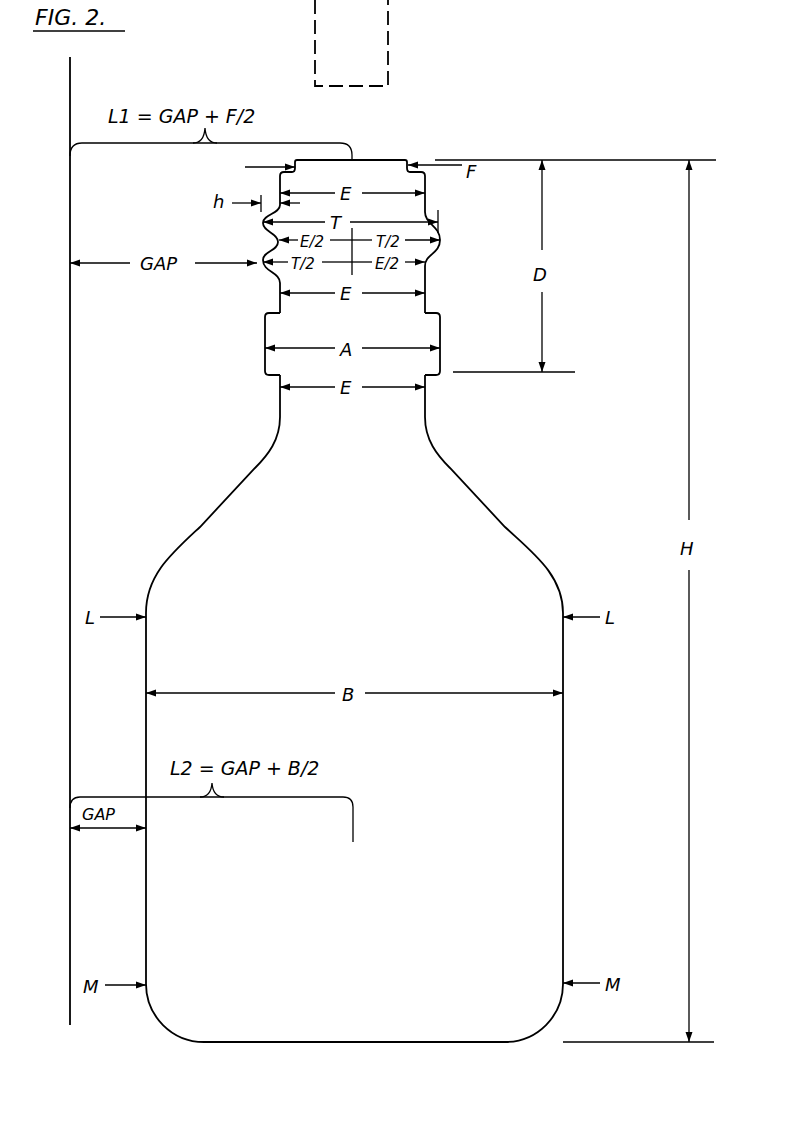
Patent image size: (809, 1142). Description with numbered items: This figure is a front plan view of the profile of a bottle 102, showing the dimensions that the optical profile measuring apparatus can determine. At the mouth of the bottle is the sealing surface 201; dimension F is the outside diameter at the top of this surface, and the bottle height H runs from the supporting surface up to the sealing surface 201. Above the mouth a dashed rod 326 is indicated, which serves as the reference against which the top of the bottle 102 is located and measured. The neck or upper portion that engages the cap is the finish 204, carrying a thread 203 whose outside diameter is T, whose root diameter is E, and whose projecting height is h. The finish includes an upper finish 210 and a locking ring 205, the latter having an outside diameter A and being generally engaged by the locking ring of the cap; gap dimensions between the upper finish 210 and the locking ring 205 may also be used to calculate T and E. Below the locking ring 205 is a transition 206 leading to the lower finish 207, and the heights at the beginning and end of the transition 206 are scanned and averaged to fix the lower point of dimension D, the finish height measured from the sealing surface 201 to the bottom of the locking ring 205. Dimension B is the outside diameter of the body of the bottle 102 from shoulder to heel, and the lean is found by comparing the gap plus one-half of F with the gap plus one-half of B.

The rod 326 is at (388, 22).
The sealing surface 201 is at (385, 160).
The upper finish 210 is at (426, 181).
The threads 203 is at (432, 256).
The finish 204 is at (425, 301).
The locking ring 205 is at (265, 327).
The transition 206 is at (432, 386).
The lower finish 207 is at (450, 470).
The bottle 102 is at (547, 567).